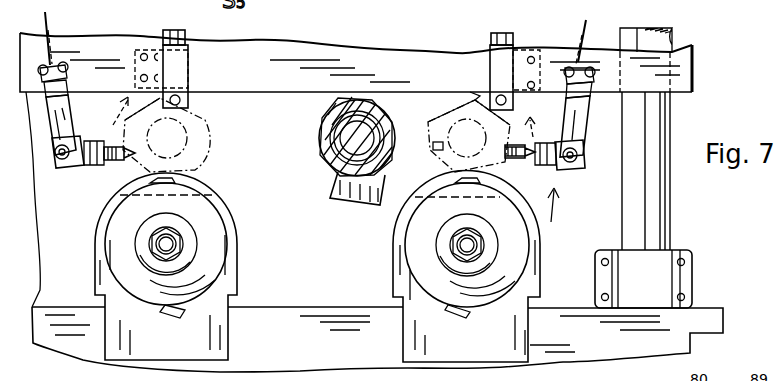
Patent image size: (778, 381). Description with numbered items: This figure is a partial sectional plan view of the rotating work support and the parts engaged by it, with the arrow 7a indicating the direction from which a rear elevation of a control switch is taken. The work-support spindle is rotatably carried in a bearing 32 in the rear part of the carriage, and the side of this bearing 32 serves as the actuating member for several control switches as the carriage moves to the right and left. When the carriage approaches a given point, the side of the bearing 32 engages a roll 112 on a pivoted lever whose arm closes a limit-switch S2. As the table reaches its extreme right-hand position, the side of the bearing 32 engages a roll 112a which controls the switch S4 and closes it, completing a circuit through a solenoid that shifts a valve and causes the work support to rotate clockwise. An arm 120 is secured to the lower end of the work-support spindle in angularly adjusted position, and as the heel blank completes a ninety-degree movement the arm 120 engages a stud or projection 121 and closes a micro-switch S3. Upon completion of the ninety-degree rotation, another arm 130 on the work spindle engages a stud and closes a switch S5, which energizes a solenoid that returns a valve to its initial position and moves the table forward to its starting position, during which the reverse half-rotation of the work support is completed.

The limit-switch S2 is at (585, 158).
The micro-switch S3 is at (490, 62).
The switch S4 is at (70, 98).
The switch S5 is at (185, 82).
The bearing 32 is at (198, 130).
The roll 112 is at (504, 160).
The roll 112a is at (128, 162).
The arm 120 is at (440, 170).
The stud or projection 121 is at (490, 100).
The arm 130 is at (322, 128).
The arrow 7a is at (557, 219).